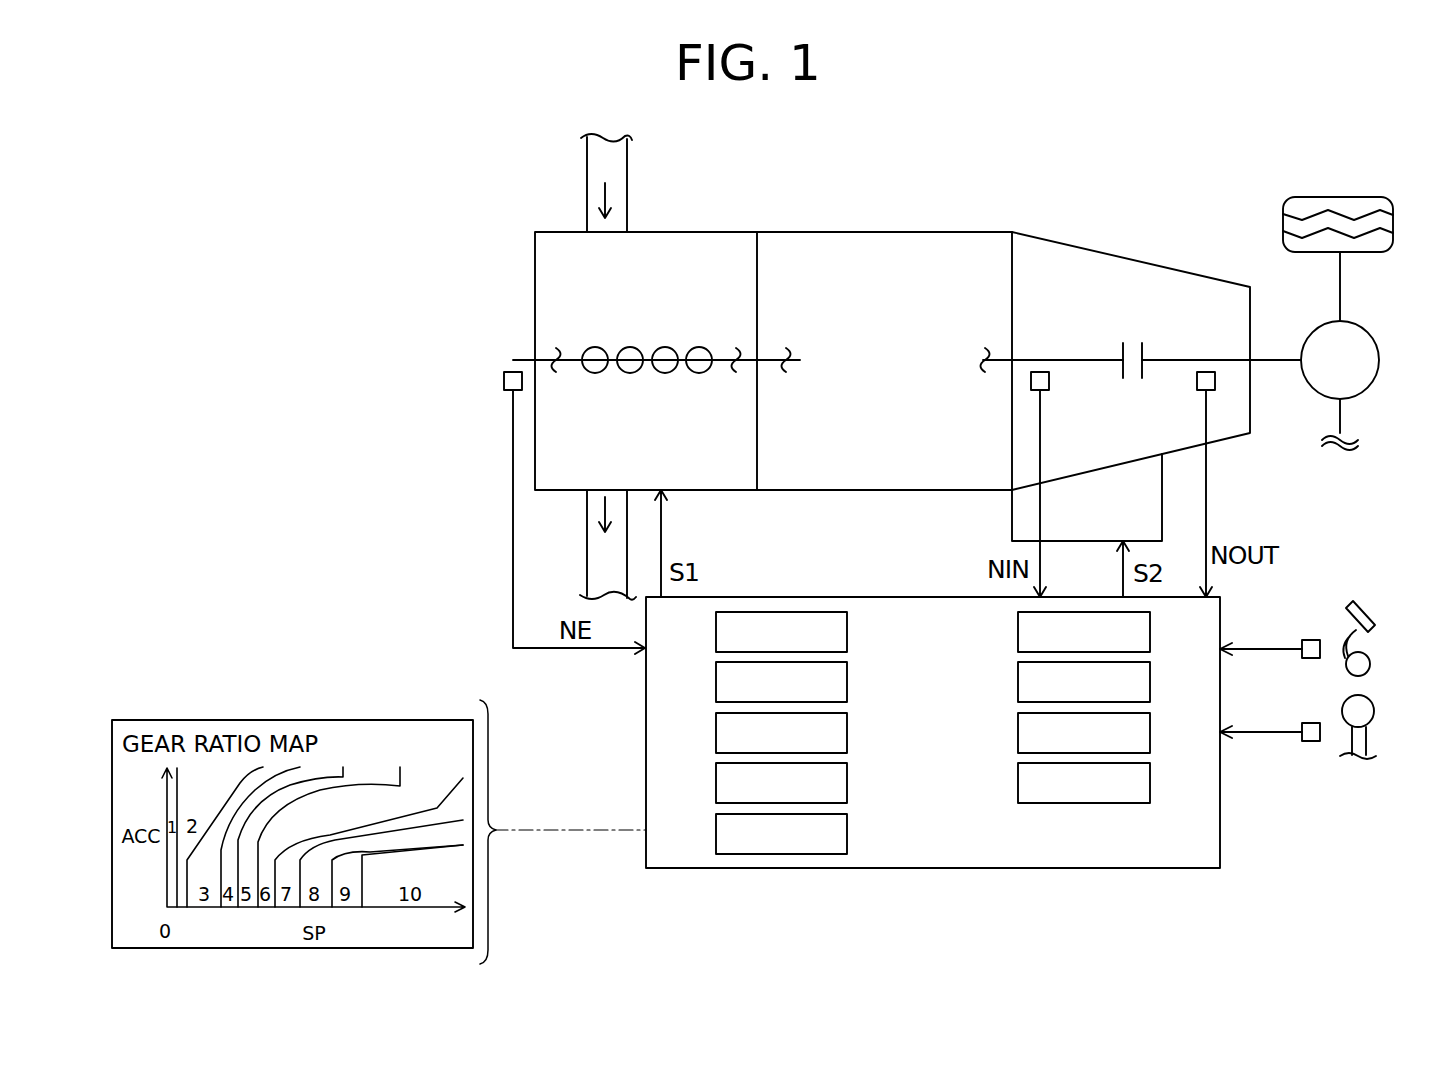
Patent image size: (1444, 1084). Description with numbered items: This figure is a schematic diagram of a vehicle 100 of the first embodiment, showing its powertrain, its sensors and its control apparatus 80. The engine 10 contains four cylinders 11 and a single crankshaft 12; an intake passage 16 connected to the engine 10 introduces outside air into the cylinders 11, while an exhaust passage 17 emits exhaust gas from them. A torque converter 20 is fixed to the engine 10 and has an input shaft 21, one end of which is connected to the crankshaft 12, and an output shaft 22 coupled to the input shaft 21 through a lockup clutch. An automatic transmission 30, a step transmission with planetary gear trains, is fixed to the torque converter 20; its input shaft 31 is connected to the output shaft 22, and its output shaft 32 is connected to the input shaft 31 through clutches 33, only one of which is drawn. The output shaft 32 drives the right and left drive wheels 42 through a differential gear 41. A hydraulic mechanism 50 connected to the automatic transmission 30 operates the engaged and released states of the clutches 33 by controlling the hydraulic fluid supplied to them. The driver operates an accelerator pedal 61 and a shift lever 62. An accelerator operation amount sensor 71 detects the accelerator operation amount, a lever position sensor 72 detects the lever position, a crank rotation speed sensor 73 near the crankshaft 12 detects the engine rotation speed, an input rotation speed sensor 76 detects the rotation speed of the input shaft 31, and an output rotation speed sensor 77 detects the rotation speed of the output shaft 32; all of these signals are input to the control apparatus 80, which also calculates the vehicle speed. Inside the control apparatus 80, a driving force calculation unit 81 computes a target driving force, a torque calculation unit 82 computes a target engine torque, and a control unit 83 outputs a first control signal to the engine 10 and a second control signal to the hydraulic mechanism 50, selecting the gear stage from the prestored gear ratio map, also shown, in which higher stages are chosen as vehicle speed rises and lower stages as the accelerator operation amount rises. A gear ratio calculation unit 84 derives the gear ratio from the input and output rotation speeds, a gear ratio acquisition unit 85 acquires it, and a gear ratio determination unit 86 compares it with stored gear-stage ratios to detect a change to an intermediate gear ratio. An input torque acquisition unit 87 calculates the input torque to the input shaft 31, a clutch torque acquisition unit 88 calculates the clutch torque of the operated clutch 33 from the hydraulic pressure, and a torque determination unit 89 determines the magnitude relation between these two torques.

The vehicle 100 is at (245, 221).
The engine 10 is at (701, 232).
The cylinders 11 is at (699, 347).
The crankshaft 12 is at (517, 356).
The intake passage 16 is at (586, 168).
The exhaust passage 17 is at (586, 523).
The torque converter 20 is at (890, 232).
The input shaft 21 is at (780, 350).
The output shaft 22 is at (987, 352).
The automatic transmission 30 is at (1080, 250).
The input shaft 31 is at (1058, 356).
The output shaft 32 is at (1207, 356).
The clutches 33 is at (1138, 335).
The differential gear 41 is at (1374, 340).
The drive wheels 42 is at (1345, 197).
The hydraulic mechanism 50 is at (1012, 522).
The accelerator pedal 61 is at (1372, 607).
The shift lever 62 is at (1375, 712).
The accelerator operation amount sensor 71 is at (1310, 638).
The lever position sensor 72 is at (1310, 723).
The crank rotation speed sensor 73 is at (504, 384).
The input rotation speed sensor 76 is at (1049, 384).
The output rotation speed sensor 77 is at (1197, 384).
The control apparatus 80 is at (1222, 835).
The driving force calculation unit 81 is at (850, 634).
The torque calculation unit 82 is at (850, 684).
The control unit 83 is at (850, 735).
The gear ratio calculation unit 84 is at (850, 785).
The gear ratio acquisition unit 85 is at (850, 836).
The gear ratio determination unit 86 is at (1153, 634).
The input torque acquisition unit 87 is at (1153, 684).
The clutch torque acquisition unit 88 is at (1153, 735).
The torque determination unit 89 is at (1153, 785).